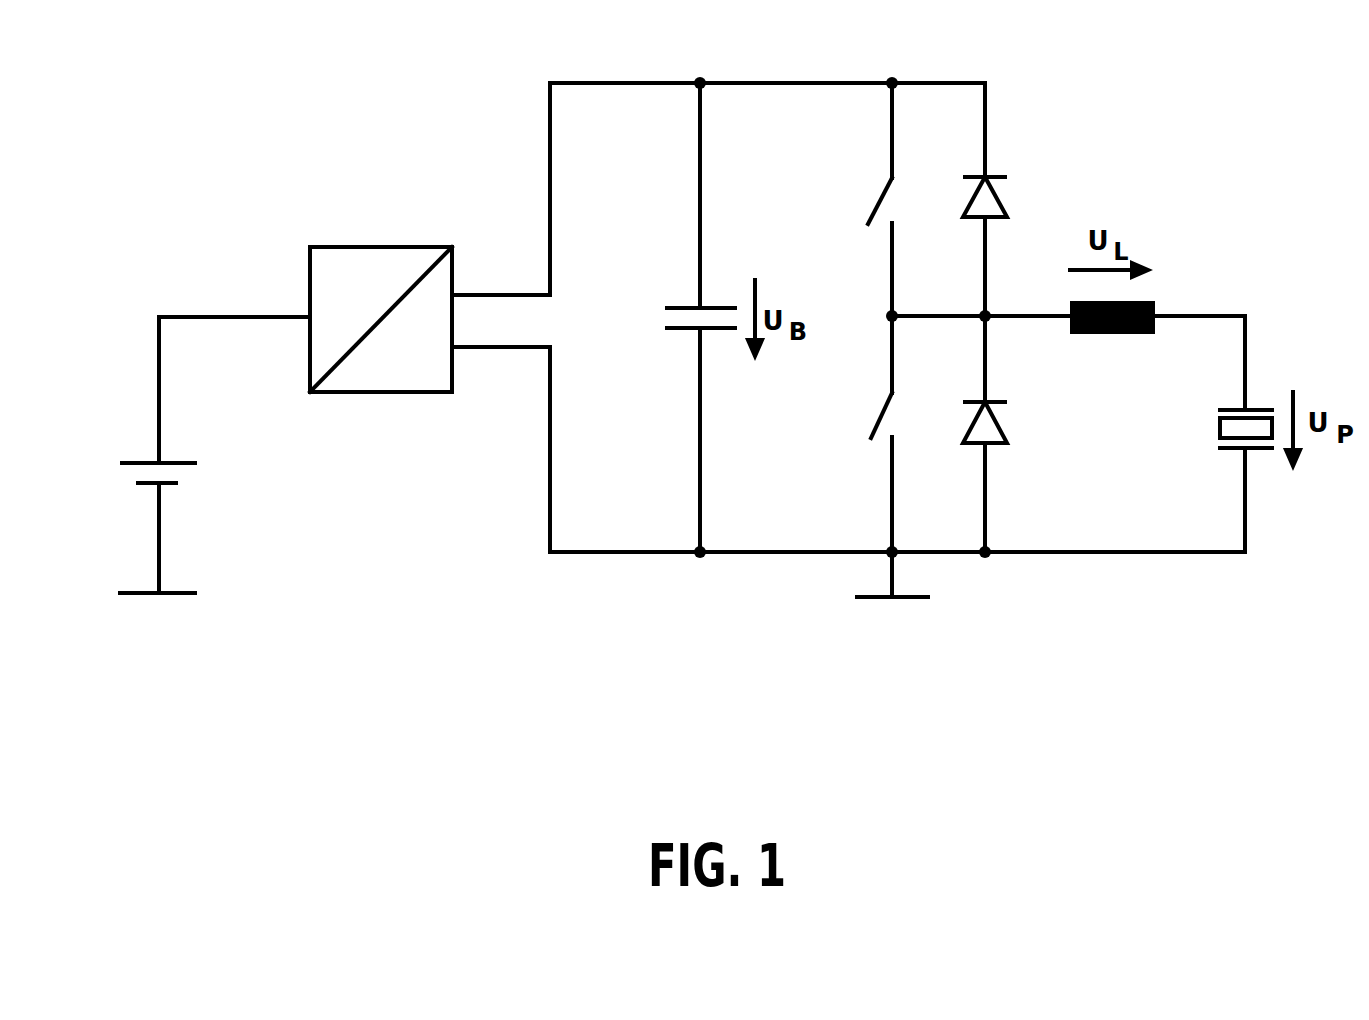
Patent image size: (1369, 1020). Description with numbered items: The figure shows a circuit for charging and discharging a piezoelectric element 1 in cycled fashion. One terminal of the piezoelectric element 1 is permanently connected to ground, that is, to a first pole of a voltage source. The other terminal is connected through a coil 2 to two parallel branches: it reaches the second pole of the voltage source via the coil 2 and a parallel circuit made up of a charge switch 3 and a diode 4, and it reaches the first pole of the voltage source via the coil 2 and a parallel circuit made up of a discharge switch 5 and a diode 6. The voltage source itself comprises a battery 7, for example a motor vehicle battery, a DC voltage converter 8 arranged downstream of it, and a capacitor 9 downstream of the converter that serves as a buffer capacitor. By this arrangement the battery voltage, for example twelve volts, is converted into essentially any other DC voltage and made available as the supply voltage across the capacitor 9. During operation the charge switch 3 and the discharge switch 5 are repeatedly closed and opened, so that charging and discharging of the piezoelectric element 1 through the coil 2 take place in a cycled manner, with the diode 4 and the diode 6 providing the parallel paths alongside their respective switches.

The piezoelectric element 1 is at (1228, 429).
The coil 2 is at (1112, 338).
The charge switch 3 is at (872, 196).
The diode 4 is at (972, 192).
The discharge switch 5 is at (877, 410).
The diode 6 is at (974, 414).
The battery 7 is at (196, 455).
The DC voltage converter 8 is at (381, 294).
The capacitor 9 is at (684, 319).